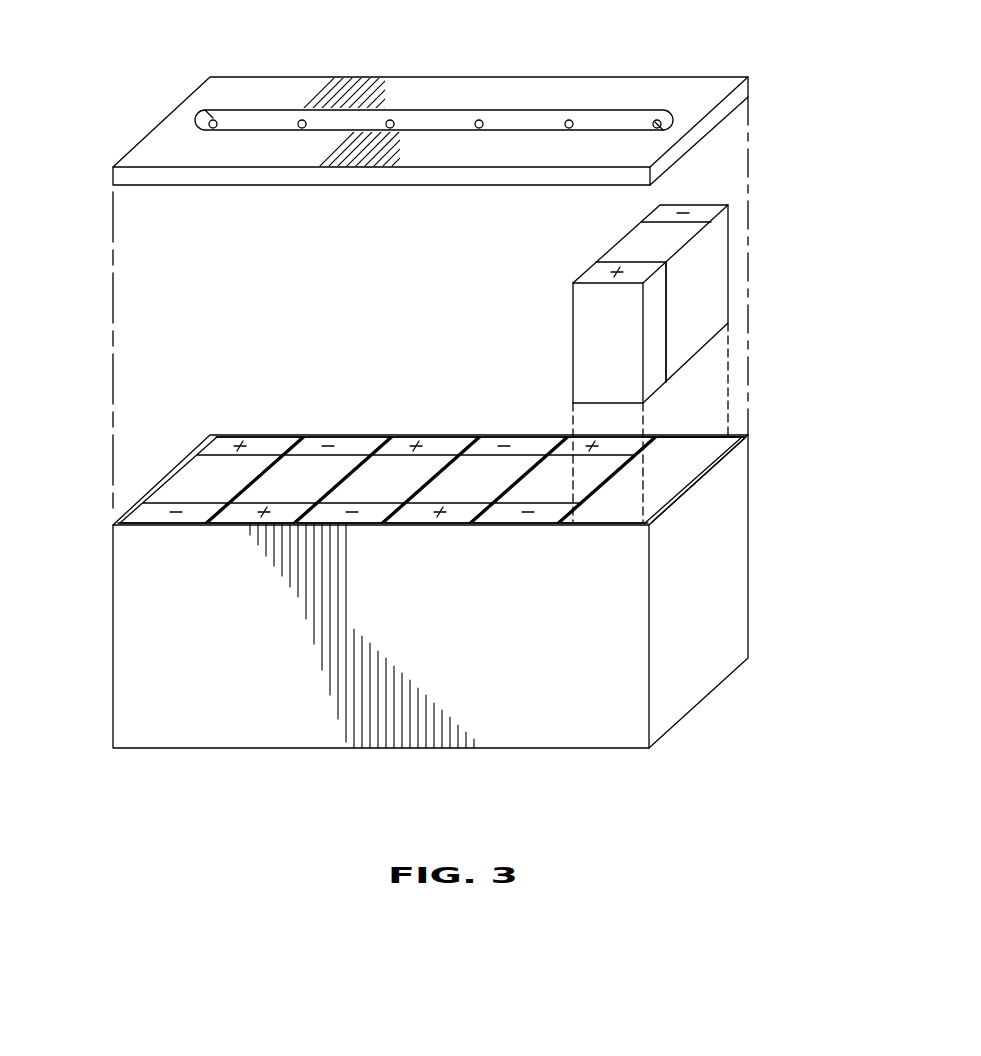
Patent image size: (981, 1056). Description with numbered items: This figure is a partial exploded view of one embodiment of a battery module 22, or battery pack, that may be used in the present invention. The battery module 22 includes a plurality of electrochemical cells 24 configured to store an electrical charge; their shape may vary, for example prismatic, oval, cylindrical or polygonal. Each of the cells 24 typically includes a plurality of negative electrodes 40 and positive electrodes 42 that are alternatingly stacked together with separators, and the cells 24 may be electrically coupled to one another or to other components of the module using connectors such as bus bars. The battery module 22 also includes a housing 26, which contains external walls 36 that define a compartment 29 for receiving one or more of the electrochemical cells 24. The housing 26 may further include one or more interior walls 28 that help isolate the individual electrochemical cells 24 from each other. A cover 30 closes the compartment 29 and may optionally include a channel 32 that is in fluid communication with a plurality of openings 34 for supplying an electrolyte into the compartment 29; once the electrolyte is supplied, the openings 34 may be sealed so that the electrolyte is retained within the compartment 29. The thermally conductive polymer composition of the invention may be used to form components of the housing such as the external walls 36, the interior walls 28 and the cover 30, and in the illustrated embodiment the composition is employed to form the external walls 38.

The battery module 22 is at (97, 168).
The electrochemical cells 24 is at (638, 249).
The housing 26 is at (720, 635).
The interior walls 28 is at (300, 524).
The compartment 29 is at (703, 441).
The cover 30 is at (160, 147).
The channel 32 is at (272, 118).
The openings 34 is at (300, 118).
The external walls 36 is at (730, 509).
The external walls 38 is at (678, 448).
The negative electrodes 40 is at (718, 236).
The positive electrodes 42 is at (655, 368).